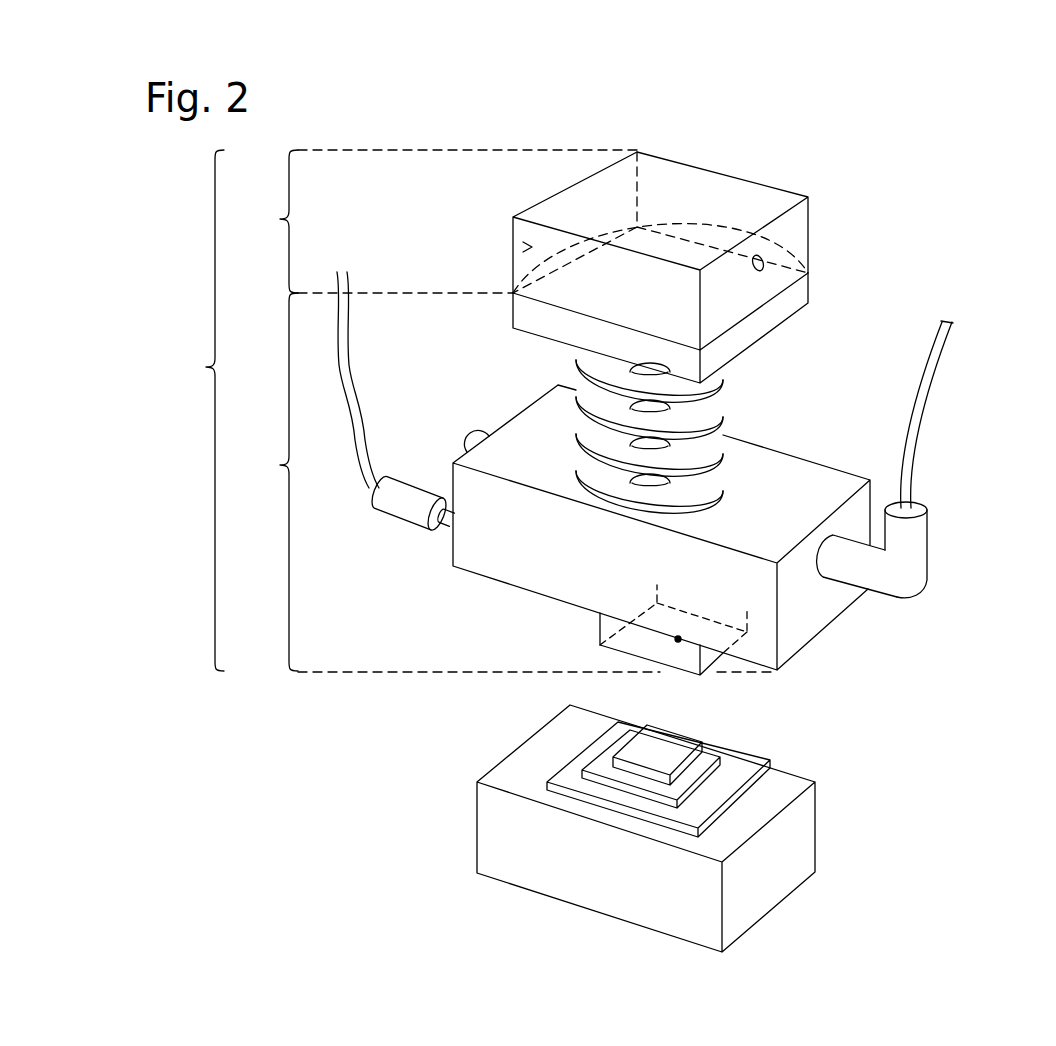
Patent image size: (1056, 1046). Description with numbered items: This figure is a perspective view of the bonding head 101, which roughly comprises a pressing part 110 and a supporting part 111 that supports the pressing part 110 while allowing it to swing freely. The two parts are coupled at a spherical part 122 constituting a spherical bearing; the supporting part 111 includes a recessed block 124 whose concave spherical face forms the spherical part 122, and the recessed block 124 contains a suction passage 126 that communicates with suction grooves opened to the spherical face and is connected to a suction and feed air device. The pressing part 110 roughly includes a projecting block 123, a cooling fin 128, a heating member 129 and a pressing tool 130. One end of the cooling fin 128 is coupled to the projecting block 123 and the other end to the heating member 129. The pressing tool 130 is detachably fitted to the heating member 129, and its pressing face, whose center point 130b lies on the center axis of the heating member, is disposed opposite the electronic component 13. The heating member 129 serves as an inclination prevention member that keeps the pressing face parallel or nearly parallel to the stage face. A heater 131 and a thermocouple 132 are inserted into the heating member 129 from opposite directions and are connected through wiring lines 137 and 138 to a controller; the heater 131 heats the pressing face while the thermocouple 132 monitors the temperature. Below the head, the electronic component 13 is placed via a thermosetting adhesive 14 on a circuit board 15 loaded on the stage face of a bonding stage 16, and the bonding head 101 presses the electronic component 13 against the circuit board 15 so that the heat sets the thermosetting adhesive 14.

The bonding head 101 is at (191, 410).
The supporting part 111 is at (435, 221).
The pressing part 110 is at (505, 482).
The spherical part 122 is at (706, 218).
The projecting block 123 is at (523, 313).
The recessed block 124 is at (532, 247).
The suction passage 126 is at (768, 259).
The cooling fin 128 is at (723, 390).
The heating member 129 is at (480, 545).
The pressing tool 130 is at (603, 630).
The center point 130b is at (678, 639).
The heater 131 is at (912, 560).
The thermocouple 132 is at (420, 522).
The wiring line 137 is at (922, 420).
The wiring line 138 is at (339, 364).
The electronic component 13 is at (688, 742).
The thermosetting adhesive 14 is at (712, 775).
The circuit board 15 is at (748, 793).
The bonding stage 16 is at (777, 873).